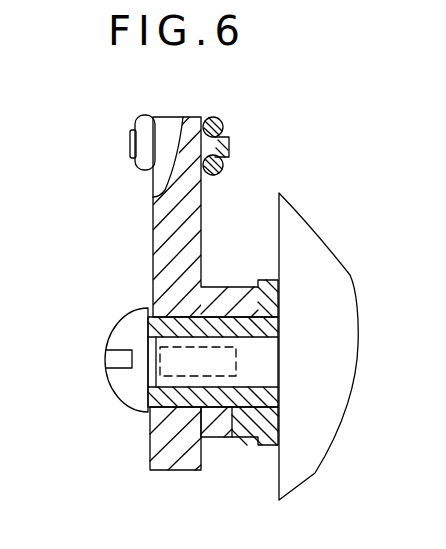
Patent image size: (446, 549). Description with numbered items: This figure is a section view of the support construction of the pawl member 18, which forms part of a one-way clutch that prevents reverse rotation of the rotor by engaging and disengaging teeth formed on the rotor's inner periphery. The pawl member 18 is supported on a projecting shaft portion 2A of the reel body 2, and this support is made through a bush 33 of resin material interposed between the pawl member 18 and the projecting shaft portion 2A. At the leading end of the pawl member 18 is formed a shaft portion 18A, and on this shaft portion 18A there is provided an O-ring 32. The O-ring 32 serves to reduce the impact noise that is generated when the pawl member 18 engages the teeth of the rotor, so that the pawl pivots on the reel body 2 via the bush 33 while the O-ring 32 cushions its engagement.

The reel body 2 is at (336, 275).
The projecting shaft portion 2A is at (263, 372).
The pawl member 18 is at (153, 255).
The shaft portion 18A is at (229, 145).
The O-ring 32 is at (137, 168).
The bush 33 is at (234, 445).